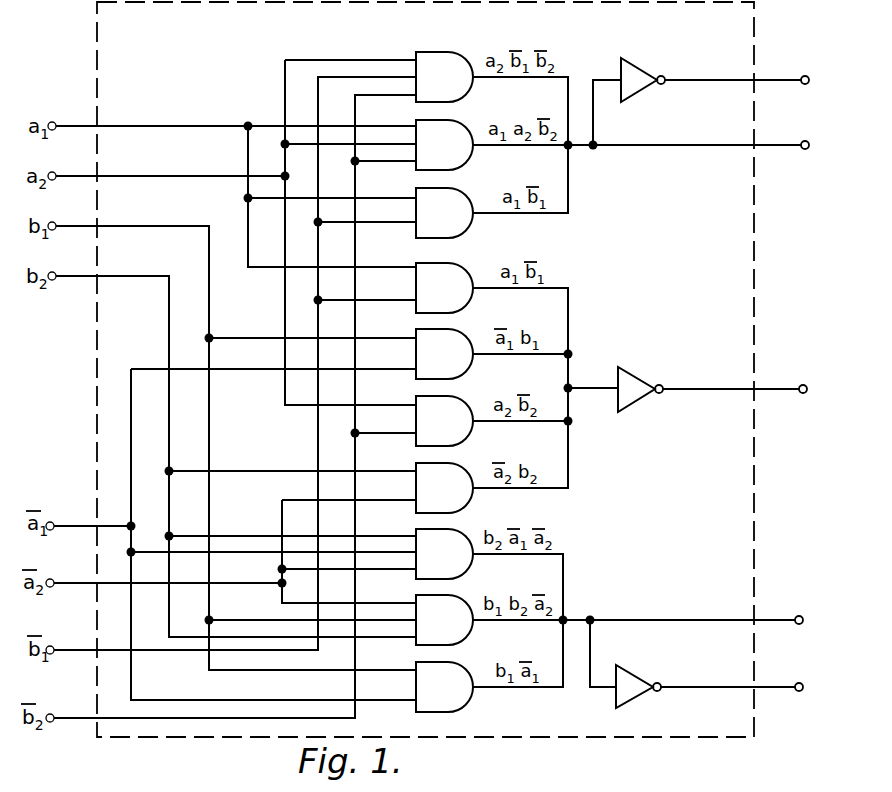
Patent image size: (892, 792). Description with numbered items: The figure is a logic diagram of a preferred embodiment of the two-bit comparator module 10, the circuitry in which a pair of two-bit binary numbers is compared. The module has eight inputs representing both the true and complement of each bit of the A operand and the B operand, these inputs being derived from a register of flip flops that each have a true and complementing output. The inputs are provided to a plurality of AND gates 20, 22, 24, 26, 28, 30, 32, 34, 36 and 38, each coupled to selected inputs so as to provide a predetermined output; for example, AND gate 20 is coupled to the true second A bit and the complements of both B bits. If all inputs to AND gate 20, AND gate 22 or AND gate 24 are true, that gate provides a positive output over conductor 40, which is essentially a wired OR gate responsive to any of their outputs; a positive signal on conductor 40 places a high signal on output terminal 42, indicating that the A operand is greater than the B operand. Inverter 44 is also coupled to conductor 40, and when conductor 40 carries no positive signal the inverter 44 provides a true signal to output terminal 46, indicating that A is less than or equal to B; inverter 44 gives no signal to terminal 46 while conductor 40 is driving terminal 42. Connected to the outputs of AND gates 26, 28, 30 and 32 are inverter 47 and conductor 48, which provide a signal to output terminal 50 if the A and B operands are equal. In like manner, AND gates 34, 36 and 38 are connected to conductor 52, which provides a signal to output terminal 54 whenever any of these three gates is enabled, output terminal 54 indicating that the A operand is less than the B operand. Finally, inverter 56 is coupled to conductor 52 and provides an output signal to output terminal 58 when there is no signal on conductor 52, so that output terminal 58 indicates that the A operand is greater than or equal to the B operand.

The two-bit comparator module 10 is at (436, 25).
The AND gate 20 is at (430, 89).
The AND gate 22 is at (430, 157).
The AND gate 24 is at (430, 225).
The AND gate 26 is at (430, 300).
The AND gate 28 is at (430, 366).
The AND gate 30 is at (430, 433).
The AND gate 32 is at (430, 500).
The AND gate 34 is at (430, 566).
The AND gate 36 is at (430, 632).
The AND gate 38 is at (430, 699).
The conductor 40 is at (582, 145).
The output terminal 42 is at (803, 150).
The inverter 44 is at (636, 64).
The output terminal 46 is at (802, 85).
The inverter 47 is at (628, 378).
The conductor 48 is at (697, 388).
The output terminal 50 is at (800, 387).
The conductor 52 is at (577, 616).
The output terminal 54 is at (795, 617).
The inverter 56 is at (637, 676).
The output terminal 58 is at (795, 683).